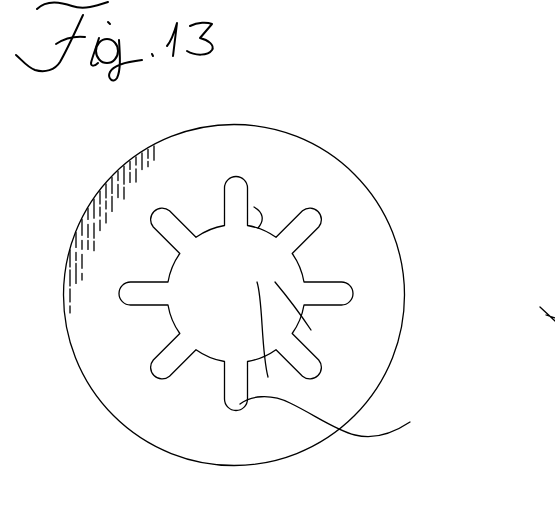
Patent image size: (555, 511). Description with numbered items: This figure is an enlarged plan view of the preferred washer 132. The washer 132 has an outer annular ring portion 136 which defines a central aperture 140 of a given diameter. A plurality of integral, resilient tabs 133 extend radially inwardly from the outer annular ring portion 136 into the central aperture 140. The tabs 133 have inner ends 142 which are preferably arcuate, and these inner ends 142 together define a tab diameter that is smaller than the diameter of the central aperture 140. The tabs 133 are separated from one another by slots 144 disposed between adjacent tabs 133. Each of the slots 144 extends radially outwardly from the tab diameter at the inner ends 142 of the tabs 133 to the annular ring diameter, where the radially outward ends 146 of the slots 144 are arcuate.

The washer 132 is at (113, 138).
The tabs 133 is at (320, 262).
The outer annular ring portion 136 is at (307, 168).
The central aperture 140 is at (245, 329).
The inner ends 142 is at (172, 312).
The slots 144 is at (369, 398).
The radially outward ends 146 is at (162, 212).